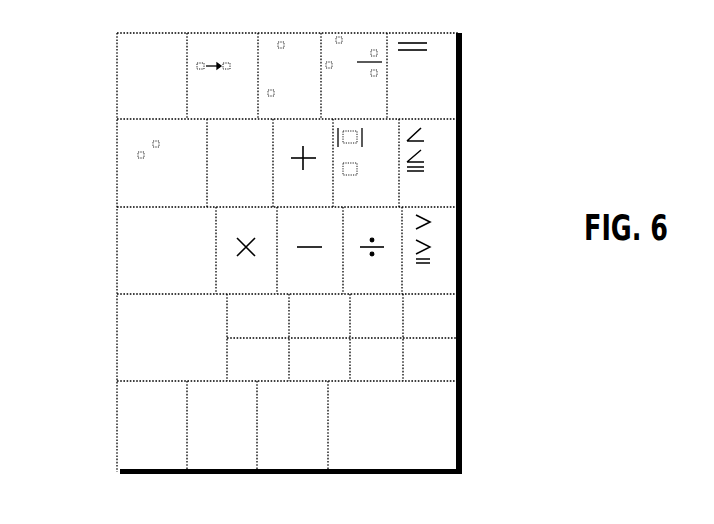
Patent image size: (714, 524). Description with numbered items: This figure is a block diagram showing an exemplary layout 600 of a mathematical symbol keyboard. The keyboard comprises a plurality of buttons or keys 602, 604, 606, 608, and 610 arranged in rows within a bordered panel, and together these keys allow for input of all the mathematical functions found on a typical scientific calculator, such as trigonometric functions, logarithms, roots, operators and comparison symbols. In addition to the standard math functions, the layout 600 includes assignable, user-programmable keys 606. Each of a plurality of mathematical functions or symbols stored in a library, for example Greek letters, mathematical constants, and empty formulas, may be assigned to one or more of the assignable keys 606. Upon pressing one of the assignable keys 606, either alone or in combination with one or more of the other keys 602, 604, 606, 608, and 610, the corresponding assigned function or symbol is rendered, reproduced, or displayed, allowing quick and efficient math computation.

The layout 600 is at (348, 253).
The keys 602 is at (437, 77).
The keys 604 is at (444, 180).
The assignable keys 606 is at (287, 333).
The keys 608 is at (446, 440).
The keys 610 is at (130, 360).